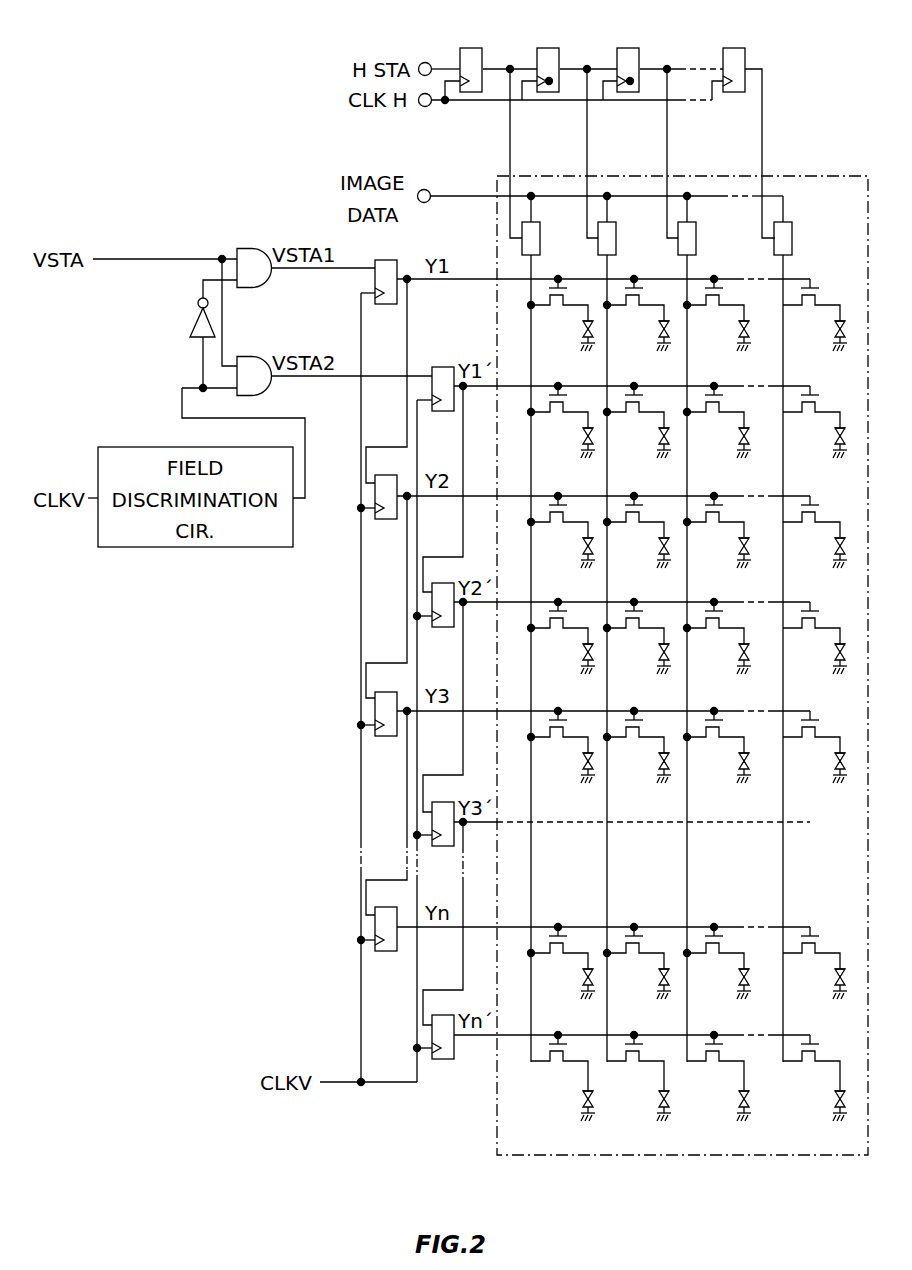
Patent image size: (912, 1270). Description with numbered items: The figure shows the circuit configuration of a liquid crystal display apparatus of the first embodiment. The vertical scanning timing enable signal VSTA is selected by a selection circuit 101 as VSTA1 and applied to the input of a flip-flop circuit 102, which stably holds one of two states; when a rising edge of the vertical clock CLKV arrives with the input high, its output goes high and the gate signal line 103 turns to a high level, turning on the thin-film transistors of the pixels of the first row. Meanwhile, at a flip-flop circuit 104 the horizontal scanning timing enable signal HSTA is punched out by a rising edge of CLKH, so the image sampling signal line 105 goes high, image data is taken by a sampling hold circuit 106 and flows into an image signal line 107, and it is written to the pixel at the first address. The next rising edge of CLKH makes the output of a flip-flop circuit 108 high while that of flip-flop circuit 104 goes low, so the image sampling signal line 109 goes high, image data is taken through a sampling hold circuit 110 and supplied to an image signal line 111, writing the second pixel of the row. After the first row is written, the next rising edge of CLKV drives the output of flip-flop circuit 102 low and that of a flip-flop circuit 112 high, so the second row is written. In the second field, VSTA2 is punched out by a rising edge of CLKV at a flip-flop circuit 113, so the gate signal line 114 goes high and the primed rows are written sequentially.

The selection circuit 101 is at (270, 230).
The flip-flop circuit 102 is at (376, 265).
The gate signal line 103 is at (651, 665).
The flip-flop circuit 104 is at (477, 48).
The image sampling signal line 105 is at (479, 153).
The sampling hold circuit 106 is at (547, 204).
The image signal line 107 is at (528, 283).
The flip-flop circuit 108 is at (558, 48).
The image sampling signal line 109 is at (623, 153).
The sampling hold circuit 110 is at (624, 204).
The image signal line 111 is at (634, 652).
The flip-flop circuit 112 is at (347, 514).
The flip-flop circuit 113 is at (432, 367).
The gate signal line 114 is at (627, 354).